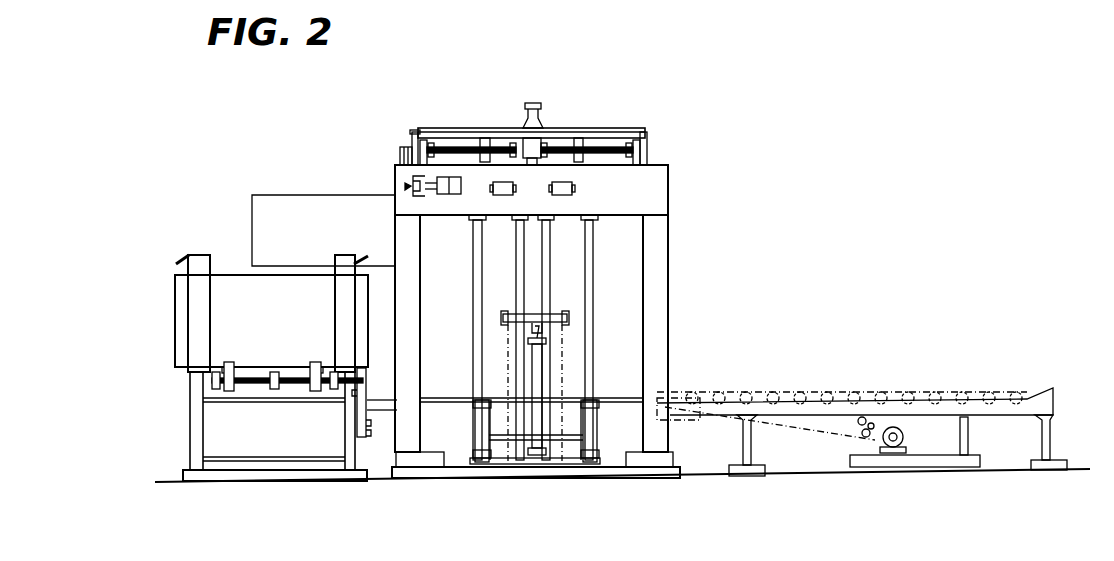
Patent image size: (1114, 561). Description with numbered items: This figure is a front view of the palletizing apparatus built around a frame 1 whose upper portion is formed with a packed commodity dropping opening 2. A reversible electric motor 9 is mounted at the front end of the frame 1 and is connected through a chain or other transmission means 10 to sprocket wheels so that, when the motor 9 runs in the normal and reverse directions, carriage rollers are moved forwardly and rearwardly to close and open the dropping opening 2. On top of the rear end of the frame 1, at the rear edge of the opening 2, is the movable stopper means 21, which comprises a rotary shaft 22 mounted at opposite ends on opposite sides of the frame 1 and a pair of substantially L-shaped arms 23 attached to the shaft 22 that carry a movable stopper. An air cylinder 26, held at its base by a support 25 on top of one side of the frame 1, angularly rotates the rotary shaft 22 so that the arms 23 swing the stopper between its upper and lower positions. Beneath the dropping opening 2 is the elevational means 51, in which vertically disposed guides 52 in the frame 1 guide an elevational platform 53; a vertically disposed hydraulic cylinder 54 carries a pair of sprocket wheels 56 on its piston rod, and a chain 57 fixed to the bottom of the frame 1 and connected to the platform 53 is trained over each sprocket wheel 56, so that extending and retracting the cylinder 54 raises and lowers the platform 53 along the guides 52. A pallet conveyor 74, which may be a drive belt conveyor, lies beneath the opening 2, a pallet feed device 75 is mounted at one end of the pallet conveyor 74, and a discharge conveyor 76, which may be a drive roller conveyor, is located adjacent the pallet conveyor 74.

The frame 1 is at (663, 281).
The packed commodity dropping opening 2 is at (623, 231).
The reversible electric motor 9 is at (454, 177).
The transmission means 10 is at (410, 185).
The movable stopper means 21 is at (627, 128).
The rotary shaft 22 is at (607, 140).
The substantially L-shaped arms 23 is at (557, 140).
The support 25 is at (400, 155).
The air cylinder 26 is at (398, 143).
The elevational means 51 is at (574, 455).
The guides 52 is at (594, 340).
The elevational platform 53 is at (570, 395).
The hydraulic cylinder 54 is at (520, 425).
The sprocket wheels 56 is at (502, 316).
The chain 57 is at (508, 343).
The pallet conveyor 74 is at (381, 403).
The pallet feed device 75 is at (178, 320).
The discharge conveyor 76 is at (910, 390).